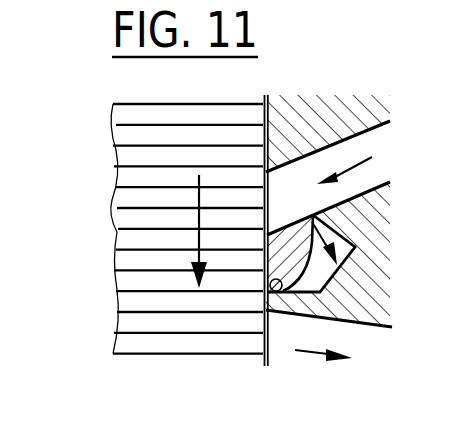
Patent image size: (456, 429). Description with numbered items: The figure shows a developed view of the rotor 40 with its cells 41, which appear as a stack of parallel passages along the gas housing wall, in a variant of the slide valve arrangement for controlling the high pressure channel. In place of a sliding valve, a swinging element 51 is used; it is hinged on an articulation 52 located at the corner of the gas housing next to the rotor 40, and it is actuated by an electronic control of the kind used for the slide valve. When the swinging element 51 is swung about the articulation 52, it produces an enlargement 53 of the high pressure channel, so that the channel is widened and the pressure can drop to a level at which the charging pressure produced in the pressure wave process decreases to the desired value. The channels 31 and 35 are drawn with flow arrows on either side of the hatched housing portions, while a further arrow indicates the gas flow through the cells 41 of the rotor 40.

The rotor 40 is at (94, 146).
The cells 41 is at (133, 281).
The inlet channel 31 is at (332, 139).
The outlet channel block 35 is at (329, 280).
The swinging element 51 is at (288, 225).
The articulation 52 is at (274, 293).
The enlargement of the high pressure channel 53 is at (317, 272).